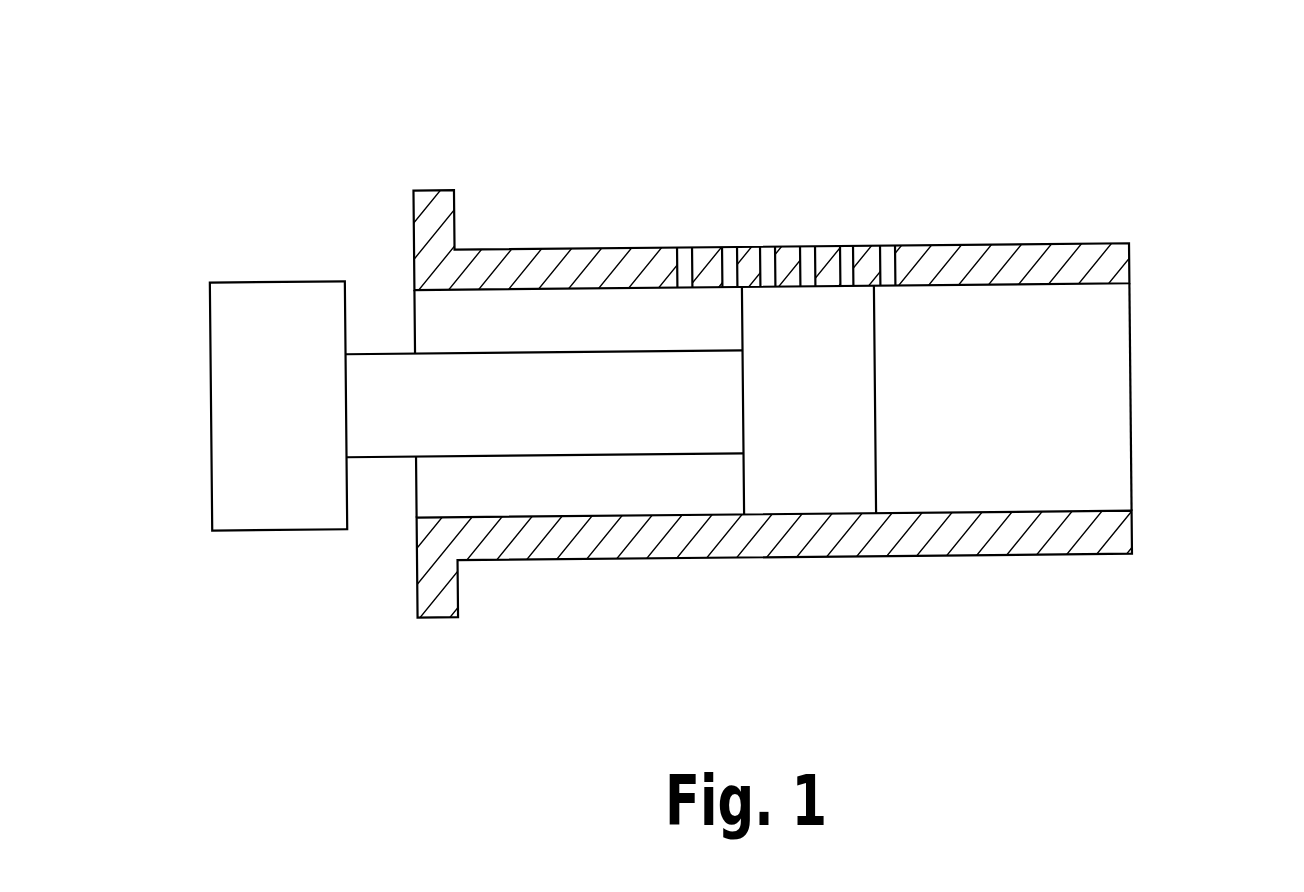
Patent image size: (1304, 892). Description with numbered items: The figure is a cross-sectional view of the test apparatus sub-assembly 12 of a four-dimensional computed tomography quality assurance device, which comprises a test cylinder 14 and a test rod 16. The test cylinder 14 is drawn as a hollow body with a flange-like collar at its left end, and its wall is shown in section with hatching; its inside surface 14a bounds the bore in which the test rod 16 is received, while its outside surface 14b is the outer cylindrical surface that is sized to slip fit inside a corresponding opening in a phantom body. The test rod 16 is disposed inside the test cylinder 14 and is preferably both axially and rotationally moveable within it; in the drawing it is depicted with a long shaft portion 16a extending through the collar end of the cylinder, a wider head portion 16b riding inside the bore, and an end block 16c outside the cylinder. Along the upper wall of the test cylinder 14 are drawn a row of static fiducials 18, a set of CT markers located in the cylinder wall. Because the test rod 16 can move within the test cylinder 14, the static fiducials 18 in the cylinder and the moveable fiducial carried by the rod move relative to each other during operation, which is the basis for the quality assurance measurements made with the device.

The test apparatus sub-assembly 12 is at (652, 370).
The test cylinder 14 is at (652, 370).
The inside surface 14a is at (652, 314).
The outside surface 14b is at (972, 555).
The test rod 16 is at (543, 458).
The piston rod 16a is at (545, 403).
The piston head 16b is at (809, 400).
The piston actuator block 16c is at (278, 405).
The static fiducials 18 is at (679, 247).